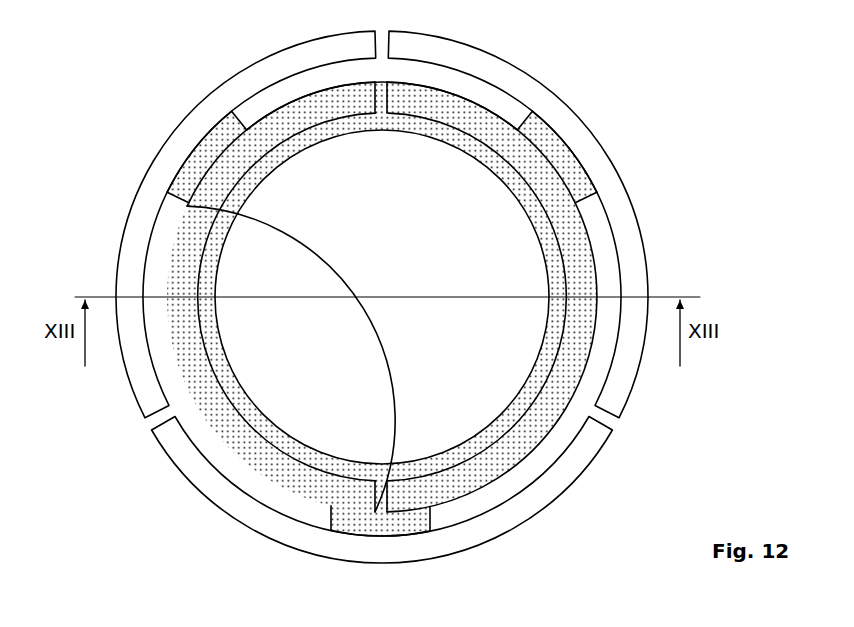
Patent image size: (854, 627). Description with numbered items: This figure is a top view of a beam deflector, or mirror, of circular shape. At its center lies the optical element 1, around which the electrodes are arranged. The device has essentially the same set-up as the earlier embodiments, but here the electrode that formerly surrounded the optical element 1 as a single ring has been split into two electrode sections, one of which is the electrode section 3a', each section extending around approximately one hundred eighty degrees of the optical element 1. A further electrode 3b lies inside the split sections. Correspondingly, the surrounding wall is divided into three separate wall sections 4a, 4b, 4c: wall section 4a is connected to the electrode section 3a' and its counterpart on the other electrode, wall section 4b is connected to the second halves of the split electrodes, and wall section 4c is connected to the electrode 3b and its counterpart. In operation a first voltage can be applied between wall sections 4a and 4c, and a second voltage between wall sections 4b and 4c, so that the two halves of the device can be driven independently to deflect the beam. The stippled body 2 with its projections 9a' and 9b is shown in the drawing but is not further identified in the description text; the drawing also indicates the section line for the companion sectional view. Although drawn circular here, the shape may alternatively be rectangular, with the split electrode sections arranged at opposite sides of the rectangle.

The optical element 1 is at (303, 185).
The elastic member 2 is at (212, 452).
The electrode section 3a' is at (246, 297).
The electrode 3b is at (510, 420).
The wall section 4a is at (165, 145).
The wall section 4b is at (597, 140).
The wall section 4c is at (378, 552).
The projection 9a' is at (178, 121).
The projection 9b is at (358, 525).